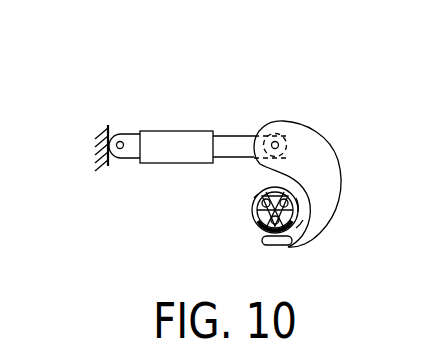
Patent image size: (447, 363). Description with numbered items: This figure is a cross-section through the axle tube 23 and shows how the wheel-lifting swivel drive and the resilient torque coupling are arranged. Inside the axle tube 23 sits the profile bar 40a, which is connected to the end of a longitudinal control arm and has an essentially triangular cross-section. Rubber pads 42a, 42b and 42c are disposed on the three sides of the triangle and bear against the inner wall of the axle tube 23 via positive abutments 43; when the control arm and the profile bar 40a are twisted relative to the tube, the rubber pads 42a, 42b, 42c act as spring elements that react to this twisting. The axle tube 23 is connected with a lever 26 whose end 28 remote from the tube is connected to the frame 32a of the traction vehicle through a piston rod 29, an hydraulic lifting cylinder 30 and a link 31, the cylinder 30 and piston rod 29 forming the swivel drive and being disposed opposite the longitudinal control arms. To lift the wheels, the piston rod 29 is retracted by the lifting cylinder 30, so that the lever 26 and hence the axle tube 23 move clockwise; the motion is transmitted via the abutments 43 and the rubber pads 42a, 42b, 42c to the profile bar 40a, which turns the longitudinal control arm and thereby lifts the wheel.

The axle tube 23 is at (253, 211).
The lever 26 is at (307, 139).
The end of lever 28 is at (278, 141).
The piston rod 29 is at (235, 137).
The hydraulic lifting cylinder 30 is at (163, 137).
The link 31 is at (121, 141).
The frame 32a is at (106, 128).
The profile bar 40a is at (265, 231).
The rubber pad 42a is at (287, 241).
The rubber pad 42b is at (300, 198).
The rubber pad 42c is at (259, 197).
The positive abutments 43 is at (304, 221).